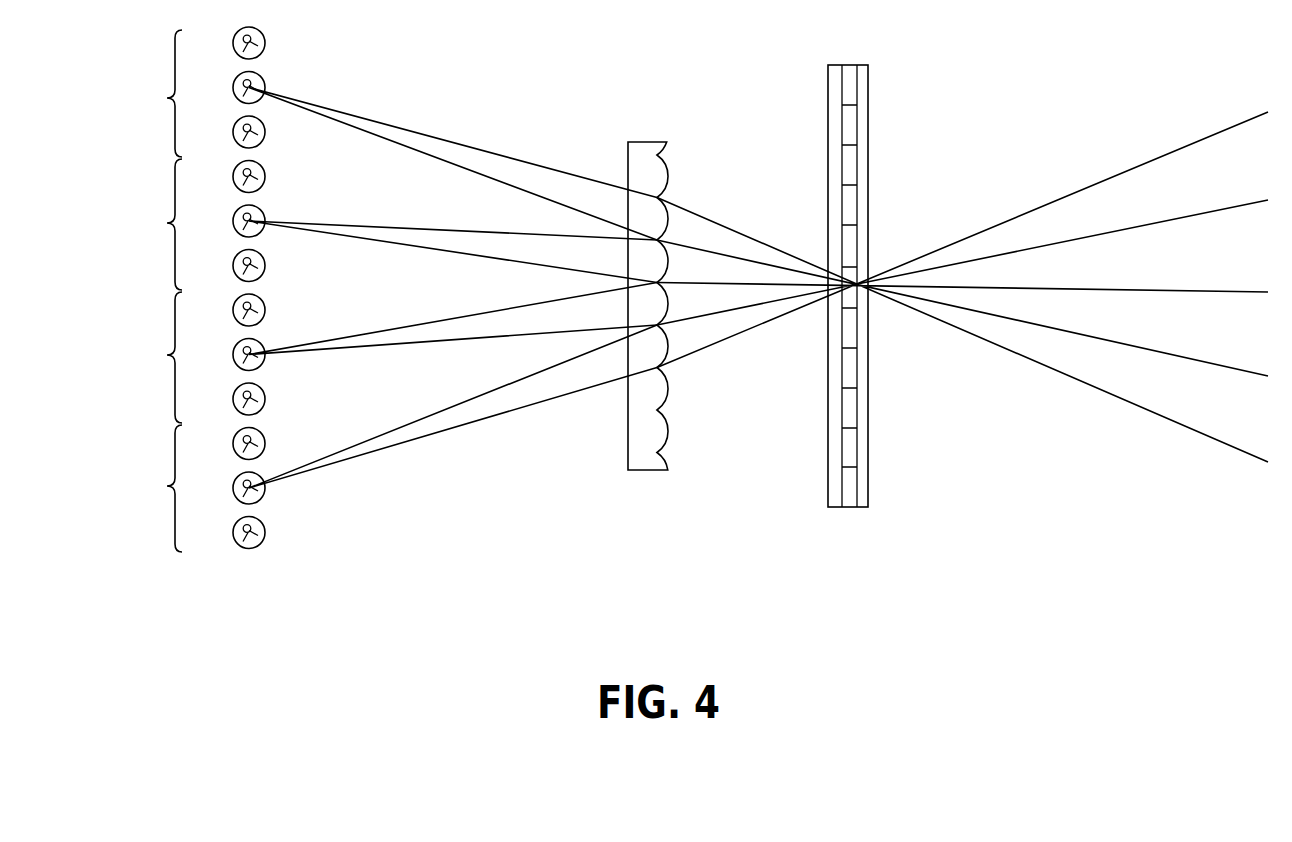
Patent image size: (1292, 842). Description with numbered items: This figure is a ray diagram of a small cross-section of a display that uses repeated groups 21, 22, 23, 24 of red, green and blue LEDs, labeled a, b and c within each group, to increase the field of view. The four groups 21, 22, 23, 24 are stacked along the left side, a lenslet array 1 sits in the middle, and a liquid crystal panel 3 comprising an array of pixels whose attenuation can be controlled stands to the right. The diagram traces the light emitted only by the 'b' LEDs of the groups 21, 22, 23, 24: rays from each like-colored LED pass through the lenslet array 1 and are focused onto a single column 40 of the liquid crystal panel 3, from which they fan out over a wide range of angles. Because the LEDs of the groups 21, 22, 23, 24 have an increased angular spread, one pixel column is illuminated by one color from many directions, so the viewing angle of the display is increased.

The lenslet array 1 is at (657, 138).
The liquid crystal panel 3 is at (870, 83).
The column 40 is at (842, 295).
The group of LEDs 21 is at (177, 492).
The group of LEDs 22 is at (173, 358).
The group of LEDs 23 is at (171, 225).
The group of LEDs 24 is at (171, 91).